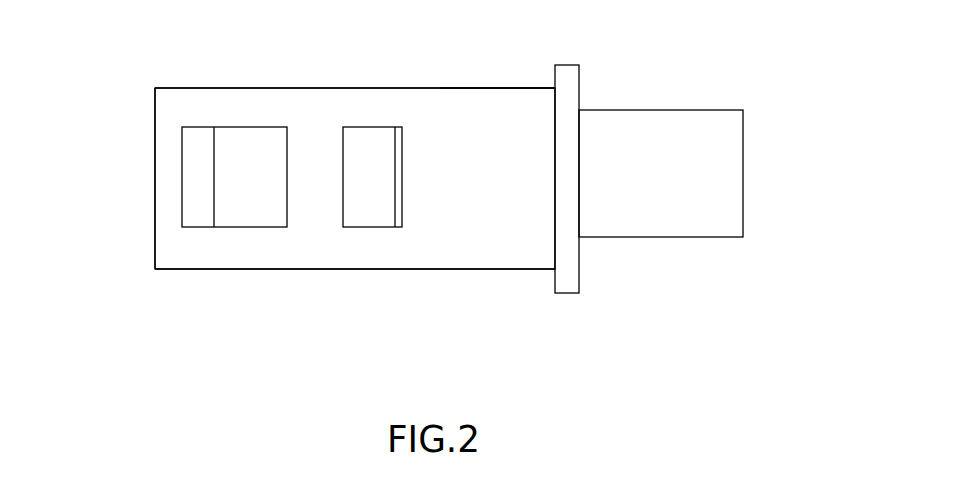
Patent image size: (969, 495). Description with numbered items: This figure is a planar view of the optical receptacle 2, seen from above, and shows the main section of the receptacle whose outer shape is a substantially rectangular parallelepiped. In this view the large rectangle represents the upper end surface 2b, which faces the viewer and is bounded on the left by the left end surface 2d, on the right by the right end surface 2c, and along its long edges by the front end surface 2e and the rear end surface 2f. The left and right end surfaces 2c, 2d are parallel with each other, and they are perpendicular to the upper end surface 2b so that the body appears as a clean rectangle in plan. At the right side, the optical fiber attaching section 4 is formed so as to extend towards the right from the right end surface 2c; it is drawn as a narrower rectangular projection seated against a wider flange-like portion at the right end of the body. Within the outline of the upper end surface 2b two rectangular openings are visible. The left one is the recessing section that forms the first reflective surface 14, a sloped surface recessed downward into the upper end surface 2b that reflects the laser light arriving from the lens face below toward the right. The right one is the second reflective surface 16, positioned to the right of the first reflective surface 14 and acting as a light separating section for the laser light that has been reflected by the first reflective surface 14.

The optical receptacle 2 is at (170, 88).
The upper end surface 2b is at (317, 88).
The right end surface 2c is at (579, 248).
The left end surface 2d is at (155, 180).
The front end surface 2e is at (445, 270).
The rear end surface 2f is at (453, 88).
The optical fiber attaching section 4 is at (660, 110).
The first reflective surface 14 is at (243, 202).
The second reflective surface 16 is at (367, 202).